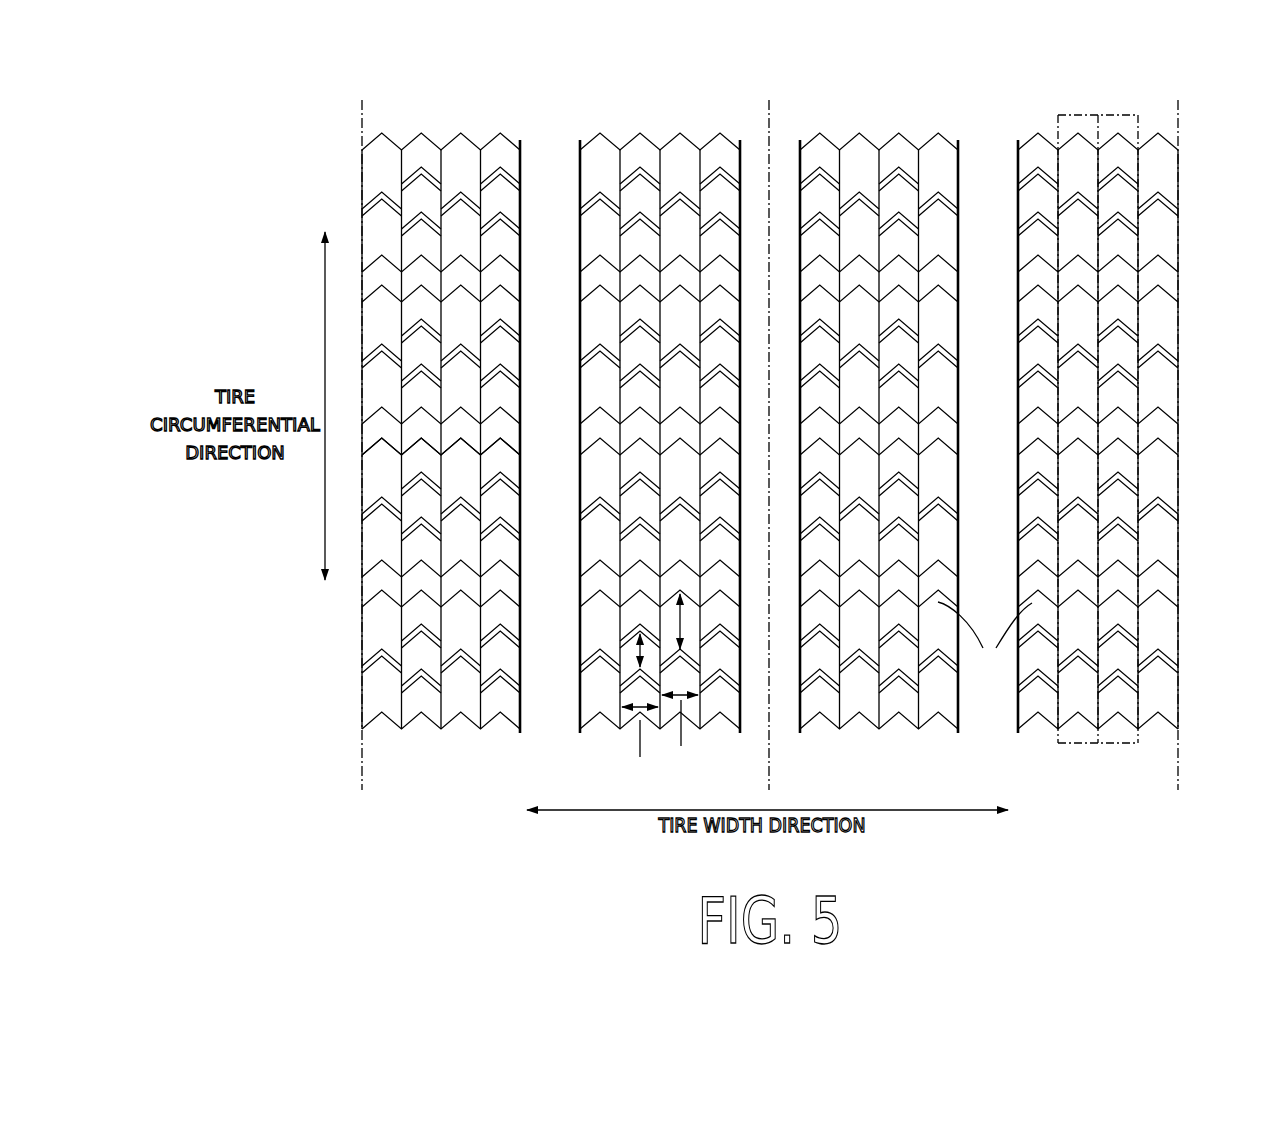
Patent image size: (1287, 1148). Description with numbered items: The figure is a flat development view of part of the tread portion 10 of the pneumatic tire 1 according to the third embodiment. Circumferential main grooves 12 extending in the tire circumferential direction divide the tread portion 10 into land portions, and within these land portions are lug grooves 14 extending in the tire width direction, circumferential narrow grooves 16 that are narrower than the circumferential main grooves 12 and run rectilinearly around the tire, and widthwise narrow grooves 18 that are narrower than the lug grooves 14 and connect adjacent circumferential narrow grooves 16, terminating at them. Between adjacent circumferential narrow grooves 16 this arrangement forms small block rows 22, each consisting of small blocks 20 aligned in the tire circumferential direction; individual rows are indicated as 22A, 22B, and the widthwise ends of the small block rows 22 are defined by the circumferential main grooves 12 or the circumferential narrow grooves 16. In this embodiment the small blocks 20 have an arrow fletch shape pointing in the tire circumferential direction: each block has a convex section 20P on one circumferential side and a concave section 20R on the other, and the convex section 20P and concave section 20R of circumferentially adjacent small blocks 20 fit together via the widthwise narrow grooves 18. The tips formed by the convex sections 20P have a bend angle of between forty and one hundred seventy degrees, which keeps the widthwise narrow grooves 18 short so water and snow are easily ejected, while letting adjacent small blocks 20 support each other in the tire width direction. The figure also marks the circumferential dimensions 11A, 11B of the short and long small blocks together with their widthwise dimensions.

The pneumatic tire 1 is at (1207, 129).
The tread portion 10 is at (1190, 239).
The circumferential dimension of short small block 11A is at (620, 675).
The circumferential dimension of long small block 11B is at (703, 672).
The circumferential main groove 12 is at (550, 178).
The lug groove 14 is at (385, 583).
The circumferential narrow groove 16 is at (655, 152).
The widthwise narrow groove 18 is at (642, 208).
The small block 20 is at (898, 197).
The convex section 20P is at (1035, 695).
The concave section 20R is at (1035, 725).
The small block row 22 is at (1063, 410).
The first block row 22A is at (1137, 115).
The second block row 22B is at (1057, 115).